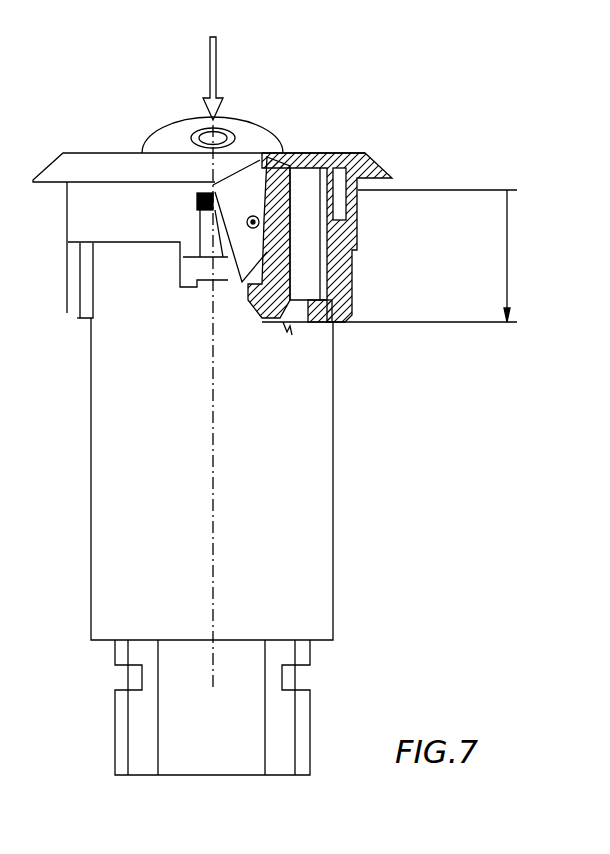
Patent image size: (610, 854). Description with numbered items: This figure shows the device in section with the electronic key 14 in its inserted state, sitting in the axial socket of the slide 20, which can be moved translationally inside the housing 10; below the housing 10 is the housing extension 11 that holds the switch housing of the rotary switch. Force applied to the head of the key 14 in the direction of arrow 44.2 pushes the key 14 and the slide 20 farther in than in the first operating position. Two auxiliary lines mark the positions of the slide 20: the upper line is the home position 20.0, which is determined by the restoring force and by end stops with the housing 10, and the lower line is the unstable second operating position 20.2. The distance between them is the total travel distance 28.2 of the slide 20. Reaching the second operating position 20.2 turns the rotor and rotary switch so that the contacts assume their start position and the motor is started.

The arrow 44.2 is at (207, 53).
The electronic key 14 is at (250, 103).
The slide 20 is at (327, 322).
The home position 20.0 is at (470, 188).
The second operating position 20.2 is at (463, 325).
The total travel distance 28.2 is at (507, 257).
The housing 10 is at (270, 556).
The housing extension 11 is at (300, 727).